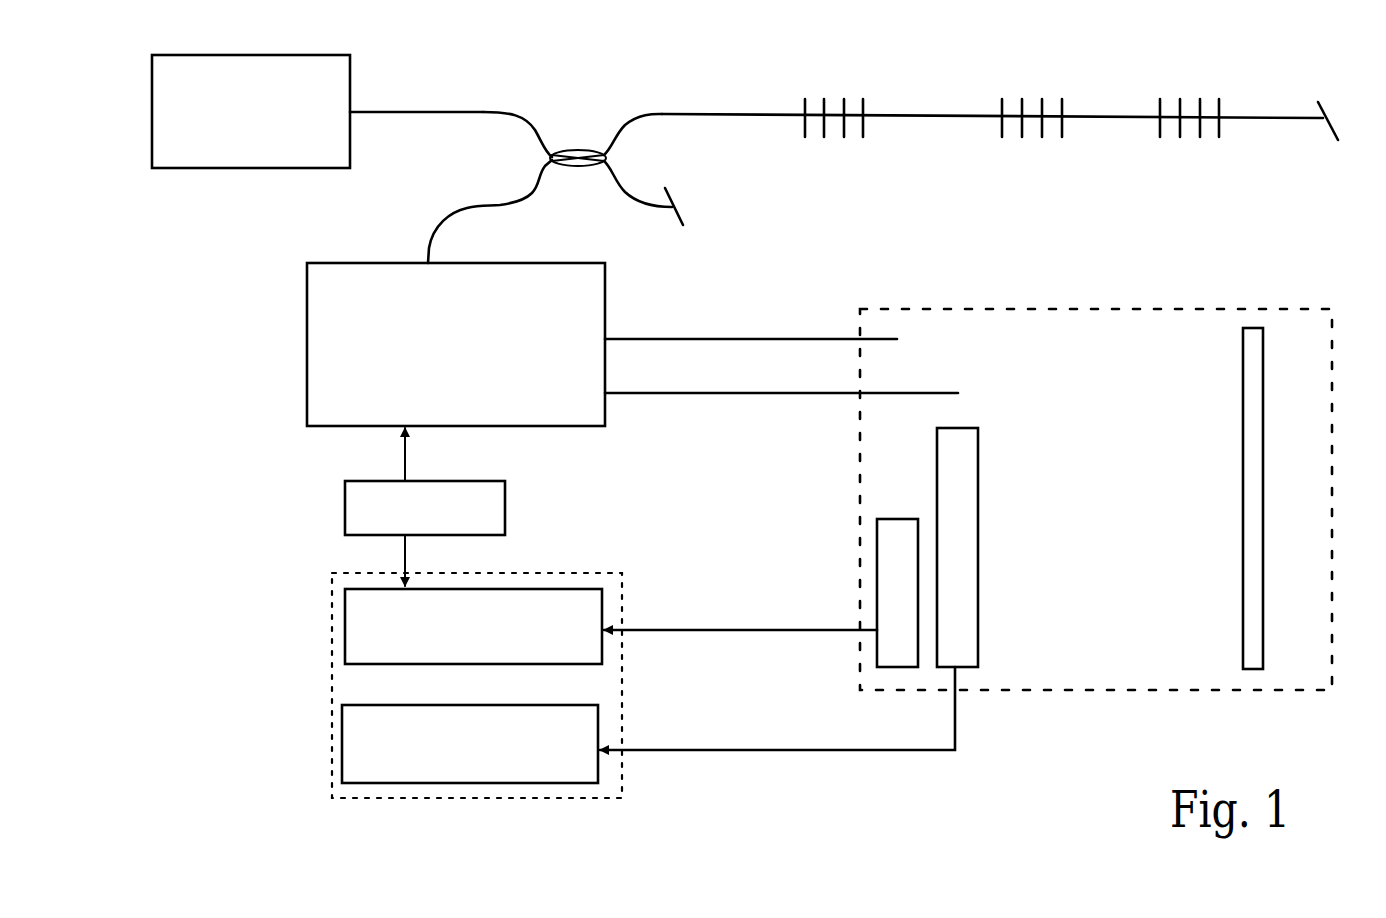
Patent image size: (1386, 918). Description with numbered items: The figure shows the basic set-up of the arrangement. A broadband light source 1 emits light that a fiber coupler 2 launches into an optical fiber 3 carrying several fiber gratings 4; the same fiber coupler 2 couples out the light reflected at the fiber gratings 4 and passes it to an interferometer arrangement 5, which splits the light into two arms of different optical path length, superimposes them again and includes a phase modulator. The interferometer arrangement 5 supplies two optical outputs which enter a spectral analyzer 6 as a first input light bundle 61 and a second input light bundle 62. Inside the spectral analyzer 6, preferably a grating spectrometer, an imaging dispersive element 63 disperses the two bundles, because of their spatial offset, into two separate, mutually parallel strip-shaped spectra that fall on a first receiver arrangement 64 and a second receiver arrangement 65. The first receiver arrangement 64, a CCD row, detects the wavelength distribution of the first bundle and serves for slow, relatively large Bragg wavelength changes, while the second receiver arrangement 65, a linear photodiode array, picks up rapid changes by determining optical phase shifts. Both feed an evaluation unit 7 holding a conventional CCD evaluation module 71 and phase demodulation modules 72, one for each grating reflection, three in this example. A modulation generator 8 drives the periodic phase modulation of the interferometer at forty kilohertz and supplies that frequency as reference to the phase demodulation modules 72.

The broadband light source 1 is at (350, 97).
The fiber coupler 2 is at (568, 152).
The optical fiber 3 is at (713, 113).
The fiber gratings 4 is at (1160, 102).
The interferometer arrangement 5 is at (605, 299).
The spectral analyzer 6 is at (1015, 309).
The first input light bundle 61 is at (882, 339).
The second input light bundle 62 is at (928, 393).
The imaging dispersive element 63 is at (1262, 600).
The first receiver arrangement 64 is at (970, 628).
The second receiver arrangement 65 is at (900, 525).
The evaluation unit 7 is at (557, 573).
The CCD evaluation module 71 is at (598, 727).
The phase demodulation module 72 is at (602, 603).
The modulation generator 8 is at (505, 497).